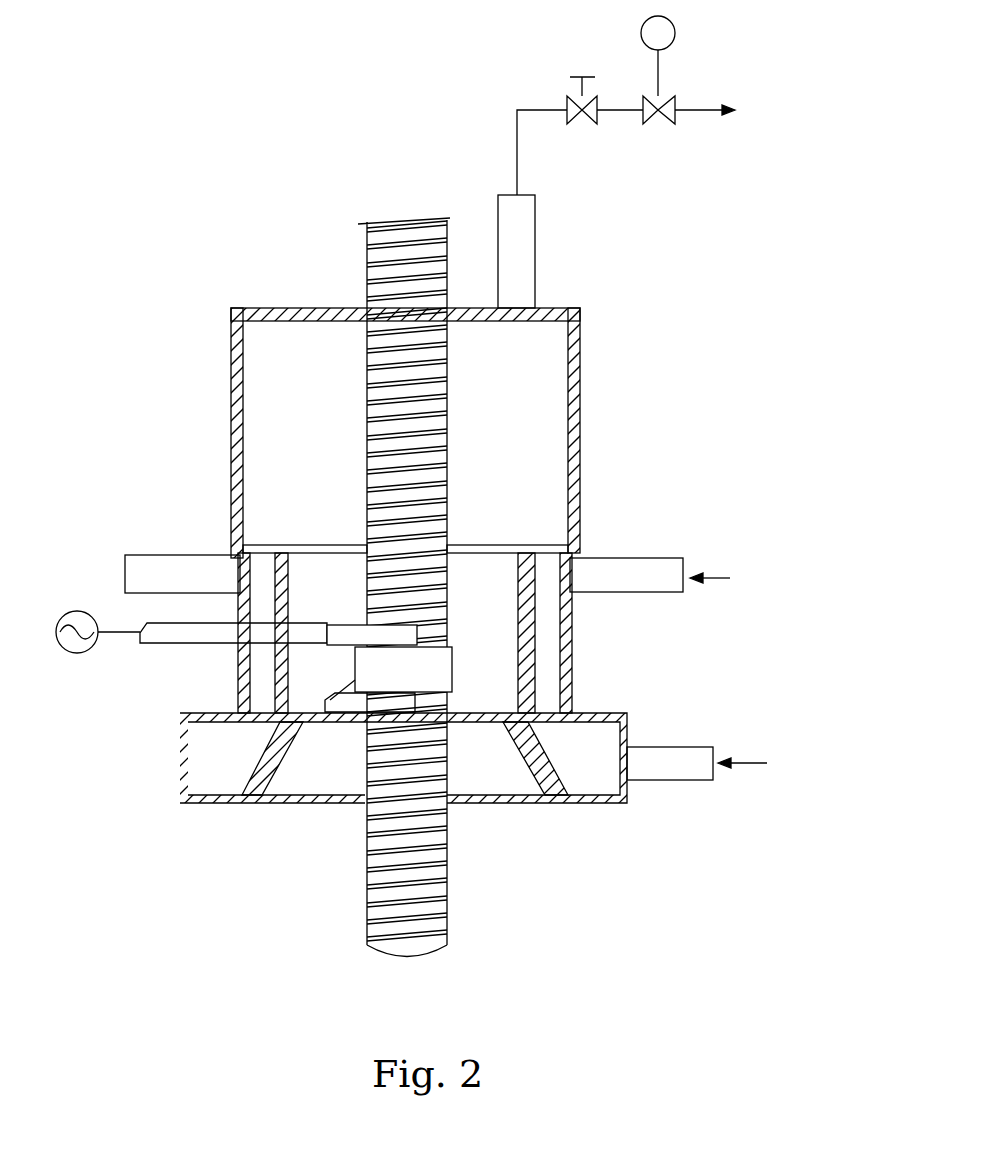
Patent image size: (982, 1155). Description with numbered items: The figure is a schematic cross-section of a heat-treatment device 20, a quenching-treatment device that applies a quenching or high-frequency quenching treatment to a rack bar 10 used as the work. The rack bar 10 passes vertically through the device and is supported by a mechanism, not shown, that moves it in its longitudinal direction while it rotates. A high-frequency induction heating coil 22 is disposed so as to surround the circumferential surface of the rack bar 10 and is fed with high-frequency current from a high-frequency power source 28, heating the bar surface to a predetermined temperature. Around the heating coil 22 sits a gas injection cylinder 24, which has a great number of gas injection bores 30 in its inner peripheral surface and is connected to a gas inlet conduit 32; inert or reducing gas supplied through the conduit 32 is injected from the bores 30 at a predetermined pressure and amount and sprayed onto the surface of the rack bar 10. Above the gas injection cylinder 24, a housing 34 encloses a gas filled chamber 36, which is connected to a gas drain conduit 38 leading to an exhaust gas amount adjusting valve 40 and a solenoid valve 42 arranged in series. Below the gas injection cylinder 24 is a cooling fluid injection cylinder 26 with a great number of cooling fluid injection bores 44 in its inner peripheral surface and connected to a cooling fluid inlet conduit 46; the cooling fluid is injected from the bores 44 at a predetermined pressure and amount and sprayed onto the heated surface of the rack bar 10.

The rack bar 10 is at (362, 290).
The heat-treatment device 20 is at (252, 268).
The high-frequency induction heating coil 22 is at (346, 722).
The gas injection cylinder 24 is at (574, 644).
The cooling fluid injection cylinder 26 is at (634, 708).
The high-frequency power source 28 is at (80, 610).
The gas injection bores 30 is at (290, 595).
The gas inlet conduit 32 is at (600, 558).
The housing 34 is at (583, 418).
The gas filled chamber 36 is at (509, 390).
The gas drain conduit 38 is at (538, 265).
The exhaust gas amount adjusting valve 40 is at (578, 122).
The solenoid valve 42 is at (655, 122).
The cooling fluid injection bores 44 is at (530, 780).
The cooling fluid inlet conduit 46 is at (680, 782).